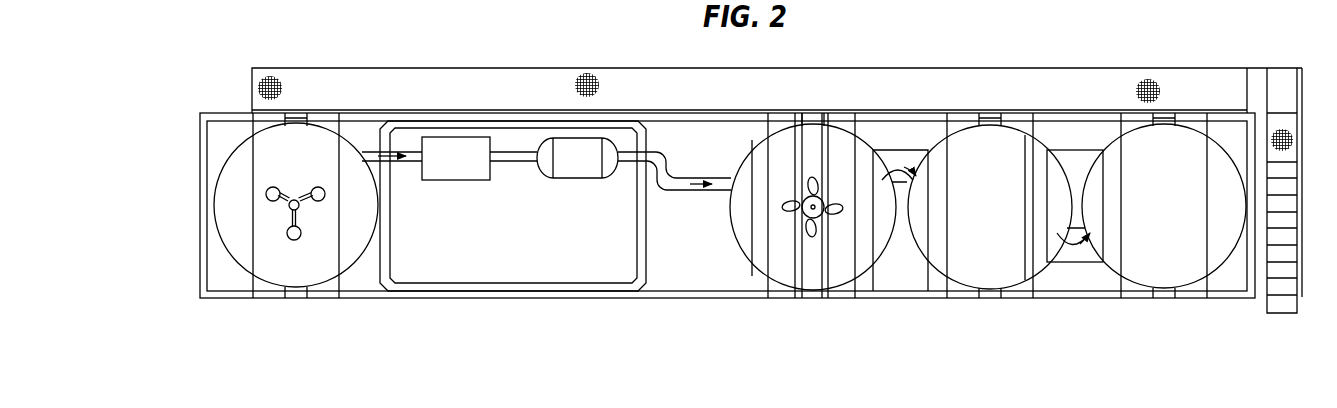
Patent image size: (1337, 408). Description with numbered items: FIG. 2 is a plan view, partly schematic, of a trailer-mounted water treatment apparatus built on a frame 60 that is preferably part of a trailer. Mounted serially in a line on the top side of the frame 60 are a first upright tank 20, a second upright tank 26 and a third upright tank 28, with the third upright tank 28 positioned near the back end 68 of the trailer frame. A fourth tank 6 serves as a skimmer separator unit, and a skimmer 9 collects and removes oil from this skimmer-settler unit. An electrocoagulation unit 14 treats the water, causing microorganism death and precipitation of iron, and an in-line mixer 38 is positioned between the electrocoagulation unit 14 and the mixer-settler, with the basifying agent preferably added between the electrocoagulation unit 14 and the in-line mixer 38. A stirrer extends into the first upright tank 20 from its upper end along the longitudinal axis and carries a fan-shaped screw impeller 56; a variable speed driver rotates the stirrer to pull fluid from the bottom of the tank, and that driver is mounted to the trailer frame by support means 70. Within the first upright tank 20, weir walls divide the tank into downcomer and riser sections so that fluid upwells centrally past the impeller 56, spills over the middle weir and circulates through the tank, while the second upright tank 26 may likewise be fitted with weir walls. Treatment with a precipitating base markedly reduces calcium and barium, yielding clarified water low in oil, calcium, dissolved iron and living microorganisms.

The fourth tank 6 is at (236, 137).
The skimmer 9 is at (301, 236).
The electrocoagulation unit 14 is at (469, 169).
The in-line mixer 38 is at (590, 169).
The first upright tank 20 is at (746, 270).
The fan-shaped screw impeller 56 is at (788, 205).
The support means 70 is at (831, 272).
The second upright tank 26 is at (923, 270).
The third upright tank 28 is at (1100, 272).
The frame 60 is at (215, 299).
The back end 68 is at (1243, 280).